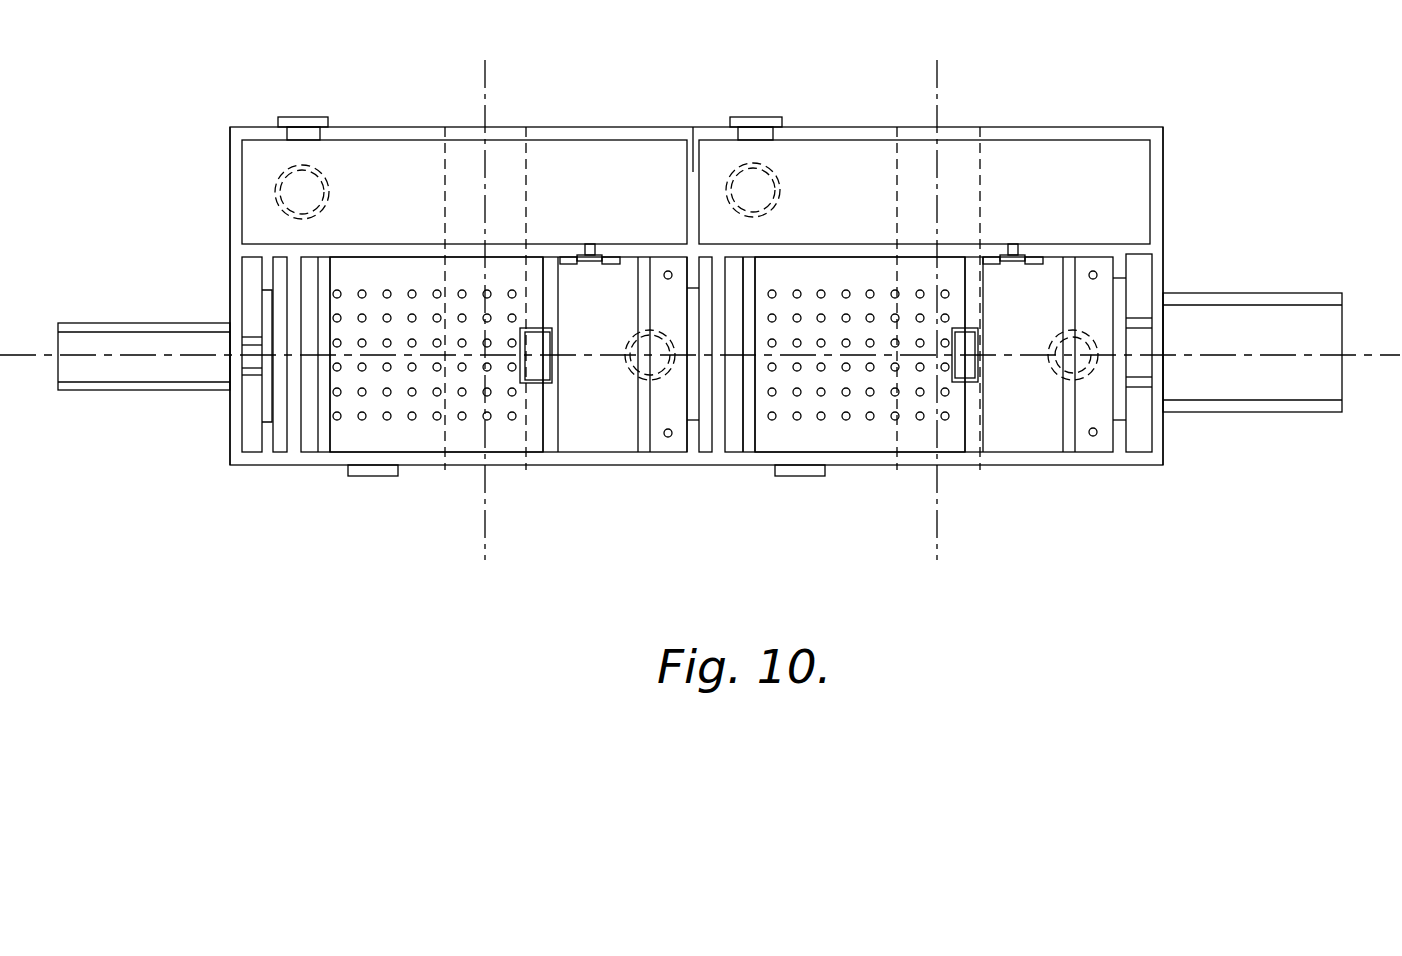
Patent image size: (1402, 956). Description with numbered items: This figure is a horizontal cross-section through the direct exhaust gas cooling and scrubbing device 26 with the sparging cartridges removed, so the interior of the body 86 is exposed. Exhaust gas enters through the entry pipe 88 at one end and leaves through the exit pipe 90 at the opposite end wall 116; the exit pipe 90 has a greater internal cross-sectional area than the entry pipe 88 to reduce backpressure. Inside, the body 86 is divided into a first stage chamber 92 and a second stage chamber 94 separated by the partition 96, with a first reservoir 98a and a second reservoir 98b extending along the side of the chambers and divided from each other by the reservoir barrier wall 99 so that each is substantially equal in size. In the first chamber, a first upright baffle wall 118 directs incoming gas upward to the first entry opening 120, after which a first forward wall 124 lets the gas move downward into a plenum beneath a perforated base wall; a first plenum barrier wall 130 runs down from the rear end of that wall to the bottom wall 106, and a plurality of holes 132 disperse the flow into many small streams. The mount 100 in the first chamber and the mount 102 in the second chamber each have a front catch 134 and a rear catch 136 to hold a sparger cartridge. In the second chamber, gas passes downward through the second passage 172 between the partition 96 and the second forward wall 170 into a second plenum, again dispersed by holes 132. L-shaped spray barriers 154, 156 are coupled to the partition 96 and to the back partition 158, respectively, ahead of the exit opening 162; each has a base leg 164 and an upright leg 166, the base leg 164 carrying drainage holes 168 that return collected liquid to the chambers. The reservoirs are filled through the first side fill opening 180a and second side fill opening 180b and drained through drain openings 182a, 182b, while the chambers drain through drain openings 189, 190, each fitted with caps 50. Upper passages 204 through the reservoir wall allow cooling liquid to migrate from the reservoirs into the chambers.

The direct exhaust gas cooling and scrubbing device 26 is at (1146, 107).
The caps 50 is at (302, 122).
The body 86 is at (1020, 478).
The entry pipe 88 is at (133, 388).
The exit pipe 90 is at (1257, 413).
The first stage chamber 92 is at (598, 453).
The second stage chamber 94 is at (1000, 445).
The partition 96 is at (692, 428).
The first reservoir 98a is at (545, 150).
The second reservoir 98b is at (1005, 150).
The reservoir barrier wall 99 is at (692, 170).
The mount 100 is at (533, 328).
The mount 102 is at (958, 328).
The bottom wall 106 is at (258, 470).
The end wall 116 is at (1165, 247).
The first upright baffle wall 118 is at (255, 437).
The first entry opening 120 is at (260, 397).
The first forward wall 124 is at (300, 420).
The first plenum barrier wall 130 is at (560, 421).
The holes 132 is at (510, 421).
The front catch 134 is at (323, 433).
The rear catch 136 is at (735, 278).
The L-shaped spray barrier 154 is at (680, 447).
The L-shaped spray barrier 156 is at (1083, 447).
The back partition 158 is at (1122, 278).
The exit opening 162 is at (1120, 307).
The base leg 164 is at (680, 263).
The upright leg 166 is at (636, 300).
The drainage holes 168 is at (668, 270).
The second forward wall 170 is at (727, 440).
The second passage 172 is at (705, 450).
The first side fill opening 180a is at (290, 141).
The second side fill opening 180b is at (758, 139).
The drain opening 182a is at (310, 195).
The drain opening 182b is at (760, 192).
The drain opening 189 is at (655, 365).
The drain opening 190 is at (1058, 368).
The upper passage 204 is at (588, 243).